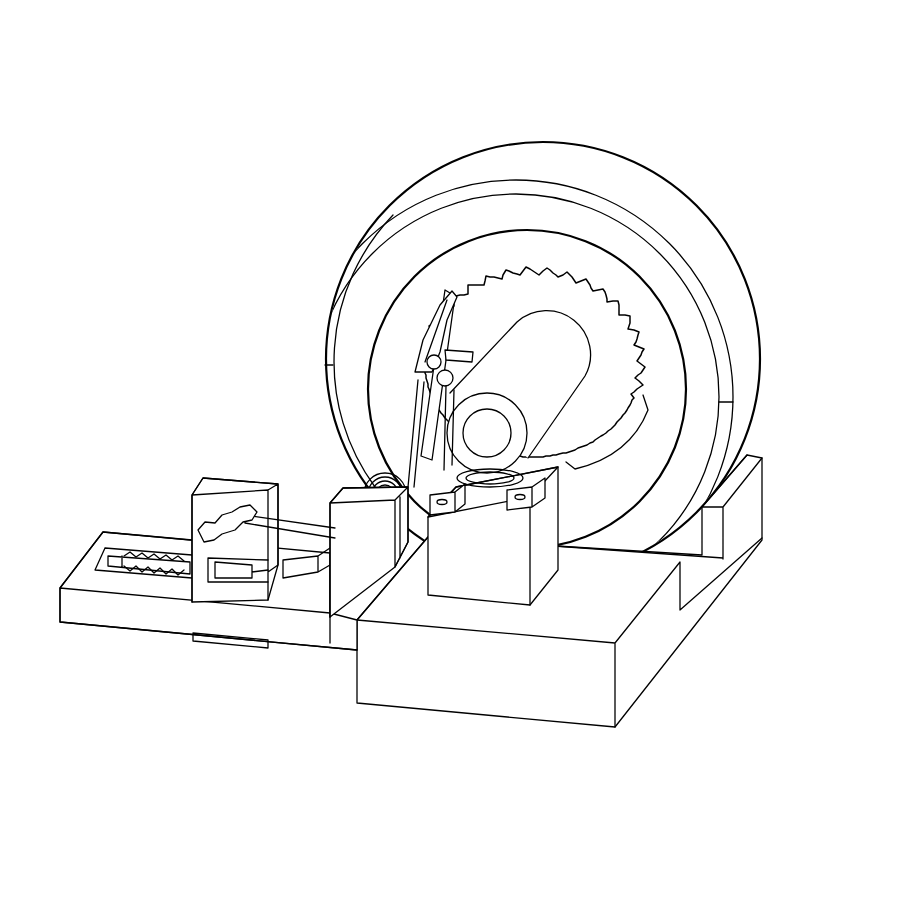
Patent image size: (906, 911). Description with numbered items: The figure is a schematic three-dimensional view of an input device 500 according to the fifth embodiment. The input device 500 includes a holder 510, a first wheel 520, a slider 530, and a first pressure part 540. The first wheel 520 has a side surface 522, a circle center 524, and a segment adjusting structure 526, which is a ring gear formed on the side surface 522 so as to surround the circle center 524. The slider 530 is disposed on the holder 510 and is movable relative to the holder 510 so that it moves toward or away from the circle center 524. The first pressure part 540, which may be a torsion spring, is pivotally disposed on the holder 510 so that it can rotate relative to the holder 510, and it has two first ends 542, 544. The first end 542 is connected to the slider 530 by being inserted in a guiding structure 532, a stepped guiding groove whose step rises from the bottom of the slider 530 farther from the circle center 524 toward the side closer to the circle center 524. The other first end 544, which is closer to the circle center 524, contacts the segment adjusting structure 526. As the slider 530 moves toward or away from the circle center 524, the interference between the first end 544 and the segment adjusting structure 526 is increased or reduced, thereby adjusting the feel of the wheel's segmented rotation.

The input device 500 is at (411, 460).
The holder 510 is at (411, 631).
The first wheel 520 is at (529, 313).
The side surface 522 is at (529, 336).
The circle center 524 is at (535, 265).
The segment adjusting structure 526 is at (536, 263).
The slider 530 is at (211, 592).
The guiding structure 532 is at (214, 613).
The first pressure part 540 is at (301, 408).
The first end 542 is at (310, 453).
The first end 544 is at (335, 380).